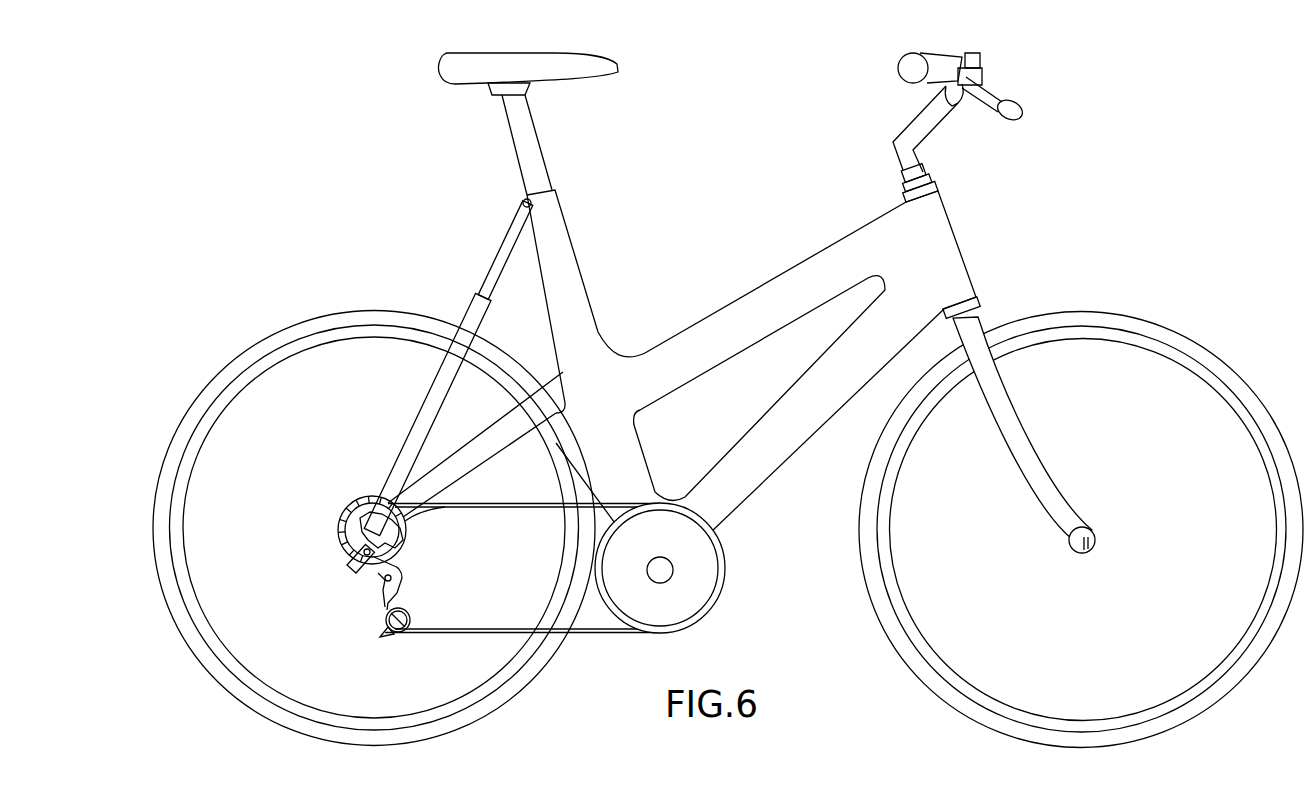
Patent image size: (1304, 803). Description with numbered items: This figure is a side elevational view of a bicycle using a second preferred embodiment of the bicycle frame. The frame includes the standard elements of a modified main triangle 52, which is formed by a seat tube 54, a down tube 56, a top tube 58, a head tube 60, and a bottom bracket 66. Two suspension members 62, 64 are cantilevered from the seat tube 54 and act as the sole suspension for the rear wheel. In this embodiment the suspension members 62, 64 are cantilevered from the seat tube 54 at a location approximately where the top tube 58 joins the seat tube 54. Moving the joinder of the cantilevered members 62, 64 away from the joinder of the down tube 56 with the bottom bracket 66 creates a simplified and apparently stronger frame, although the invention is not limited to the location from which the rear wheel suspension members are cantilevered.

The modified main triangle 52 is at (720, 293).
The seat tube 54 is at (600, 336).
The down tube 56 is at (810, 393).
The top tube 58 is at (772, 297).
The head tube 60 is at (962, 284).
The suspension member 62 is at (450, 468).
The suspension member 64 is at (488, 462).
The bottom bracket 66 is at (693, 547).